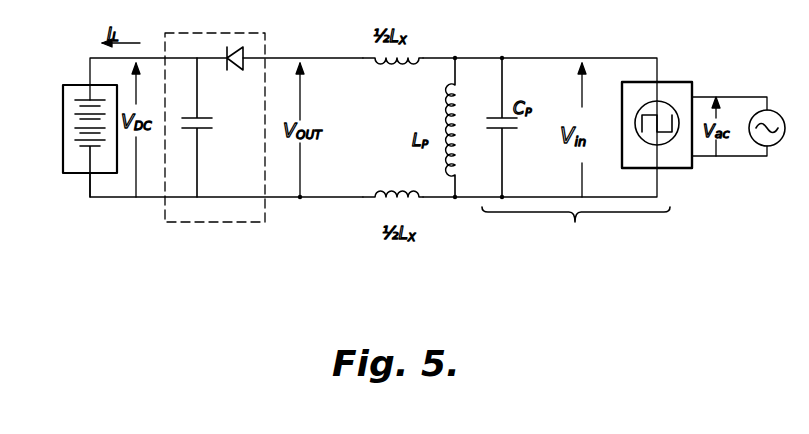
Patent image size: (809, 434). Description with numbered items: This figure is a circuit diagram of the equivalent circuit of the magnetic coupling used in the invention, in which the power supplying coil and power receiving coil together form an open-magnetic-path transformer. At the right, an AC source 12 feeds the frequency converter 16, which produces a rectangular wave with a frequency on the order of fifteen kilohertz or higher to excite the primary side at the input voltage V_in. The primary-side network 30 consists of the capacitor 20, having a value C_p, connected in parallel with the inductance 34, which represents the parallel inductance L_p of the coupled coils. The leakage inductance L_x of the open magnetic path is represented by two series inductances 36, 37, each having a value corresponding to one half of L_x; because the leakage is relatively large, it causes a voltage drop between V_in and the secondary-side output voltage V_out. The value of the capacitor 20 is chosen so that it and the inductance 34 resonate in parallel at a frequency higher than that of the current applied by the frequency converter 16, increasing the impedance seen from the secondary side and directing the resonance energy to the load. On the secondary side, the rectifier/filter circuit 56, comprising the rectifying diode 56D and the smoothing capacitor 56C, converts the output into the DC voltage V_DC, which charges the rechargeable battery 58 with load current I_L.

The rechargeable battery 58 is at (63, 152).
The rectifier/filter circuit 56 is at (203, 225).
The rectifying diode 56D is at (242, 69).
The smoothing capacitor 56C is at (207, 131).
The inductance 36 is at (388, 68).
The inductance 37 is at (382, 187).
The inductance 34 is at (447, 162).
The capacitor 20 is at (510, 128).
The resonant tank circuit 30 is at (576, 229).
The frequency converter 16 is at (680, 165).
The AC voltage source 12 is at (778, 147).